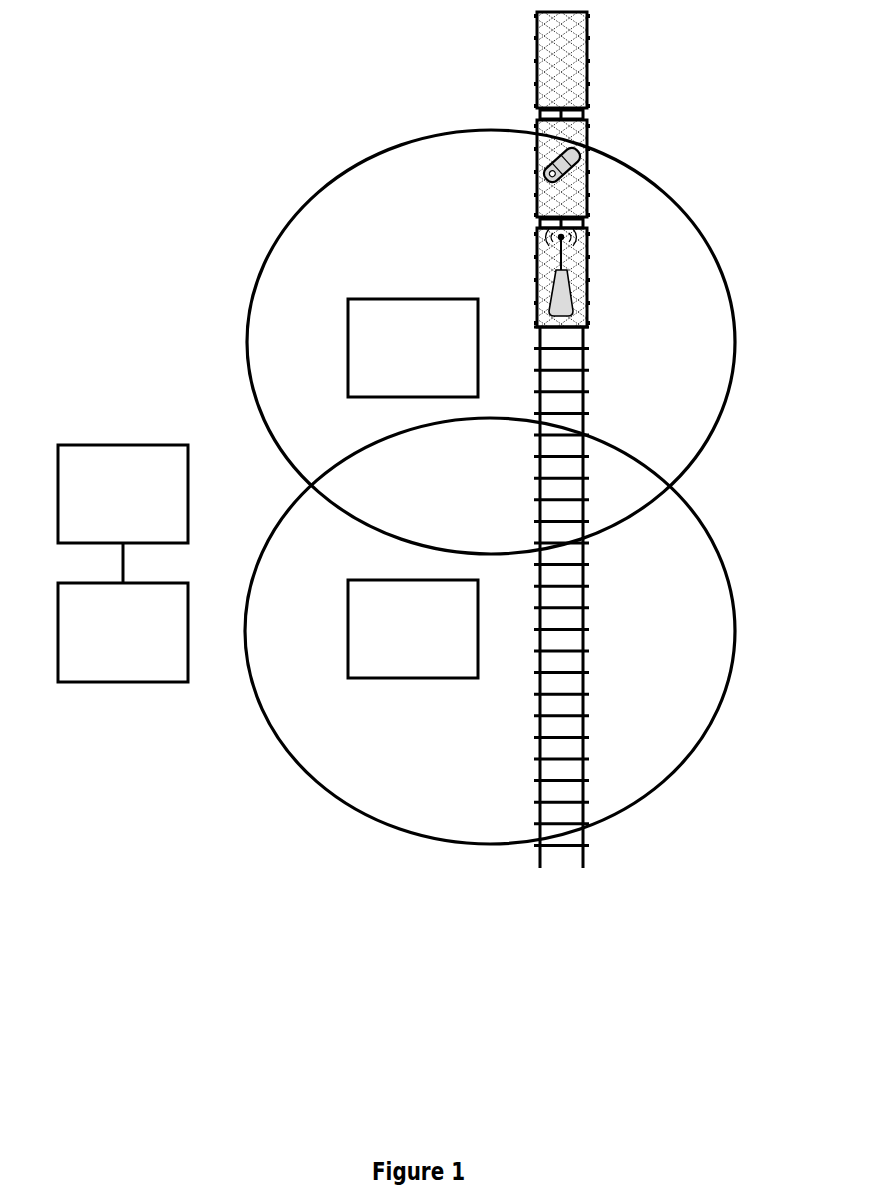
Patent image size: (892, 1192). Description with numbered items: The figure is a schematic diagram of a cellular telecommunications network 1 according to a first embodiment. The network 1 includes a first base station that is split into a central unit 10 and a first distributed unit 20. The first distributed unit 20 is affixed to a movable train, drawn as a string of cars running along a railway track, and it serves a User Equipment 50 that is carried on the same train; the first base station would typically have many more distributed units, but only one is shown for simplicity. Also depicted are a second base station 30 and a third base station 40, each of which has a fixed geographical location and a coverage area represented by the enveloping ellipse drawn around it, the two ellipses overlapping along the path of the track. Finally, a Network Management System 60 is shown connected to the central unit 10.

The cellular telecommunications network 1 is at (183, 29).
The central unit 10 is at (122, 445).
The first distributed unit 20 is at (566, 262).
The second base station 30 is at (347, 318).
The third base station 40 is at (395, 678).
The User Equipment 50 is at (583, 150).
The Network Management System 60 is at (67, 583).